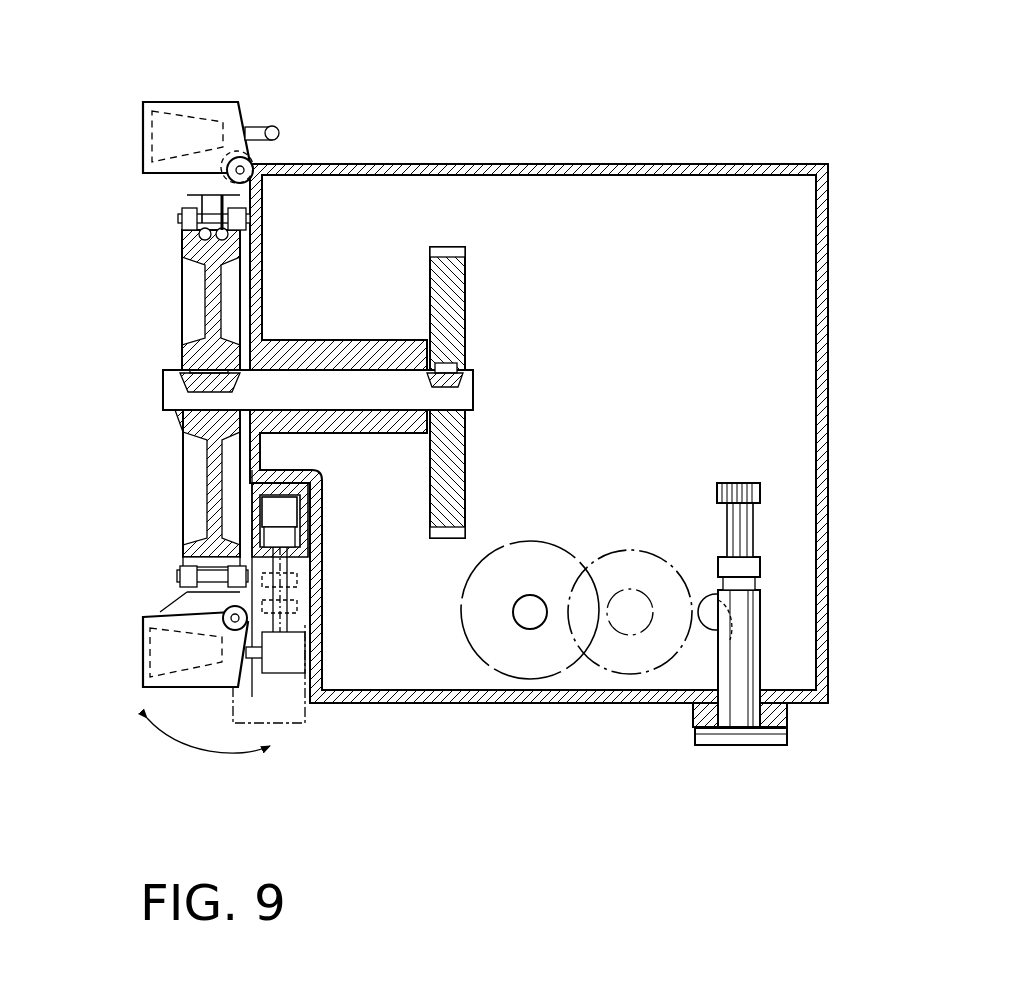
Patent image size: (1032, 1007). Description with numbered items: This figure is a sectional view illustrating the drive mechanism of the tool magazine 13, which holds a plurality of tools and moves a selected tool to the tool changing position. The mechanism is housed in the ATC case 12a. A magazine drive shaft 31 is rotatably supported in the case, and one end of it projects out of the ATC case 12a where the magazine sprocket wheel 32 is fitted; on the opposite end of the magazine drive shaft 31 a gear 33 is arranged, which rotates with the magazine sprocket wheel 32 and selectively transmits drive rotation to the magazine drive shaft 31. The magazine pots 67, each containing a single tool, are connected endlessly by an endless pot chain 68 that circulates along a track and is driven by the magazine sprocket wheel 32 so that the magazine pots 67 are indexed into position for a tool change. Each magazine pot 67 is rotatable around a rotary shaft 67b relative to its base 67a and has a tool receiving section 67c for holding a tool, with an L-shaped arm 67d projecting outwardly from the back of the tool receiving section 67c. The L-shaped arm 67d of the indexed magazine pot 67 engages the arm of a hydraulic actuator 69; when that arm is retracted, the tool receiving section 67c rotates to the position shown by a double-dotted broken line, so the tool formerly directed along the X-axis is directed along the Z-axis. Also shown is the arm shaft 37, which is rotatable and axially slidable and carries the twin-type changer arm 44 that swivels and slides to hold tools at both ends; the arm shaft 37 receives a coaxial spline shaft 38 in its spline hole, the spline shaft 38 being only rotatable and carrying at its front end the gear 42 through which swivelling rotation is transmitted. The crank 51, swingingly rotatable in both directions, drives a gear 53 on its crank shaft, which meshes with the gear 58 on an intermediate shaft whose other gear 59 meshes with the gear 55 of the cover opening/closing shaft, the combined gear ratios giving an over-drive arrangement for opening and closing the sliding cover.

The ATC case 12a is at (727, 164).
The tool magazine 13 is at (130, 182).
The magazine drive shaft 31 is at (345, 388).
The magazine sprocket wheel 32 is at (203, 483).
The gear 33 is at (452, 302).
The arm shaft 37 is at (747, 647).
The spline shaft 38 is at (750, 553).
The gear 42 is at (742, 482).
The changer arm 44 is at (752, 745).
The crank 51 is at (527, 608).
The gear 53 is at (532, 670).
The gear 55 is at (705, 625).
The gear 58 is at (630, 627).
The gear 59 is at (620, 547).
The magazine pot 67 is at (212, 99).
The base 67a is at (195, 178).
The rotary shaft 67b is at (255, 158).
The tool receiving section 67c is at (178, 130).
The L-shaped arm 67d is at (280, 135).
The endless pot chain 68 is at (185, 222).
The hydraulic actuator 69 is at (287, 510).